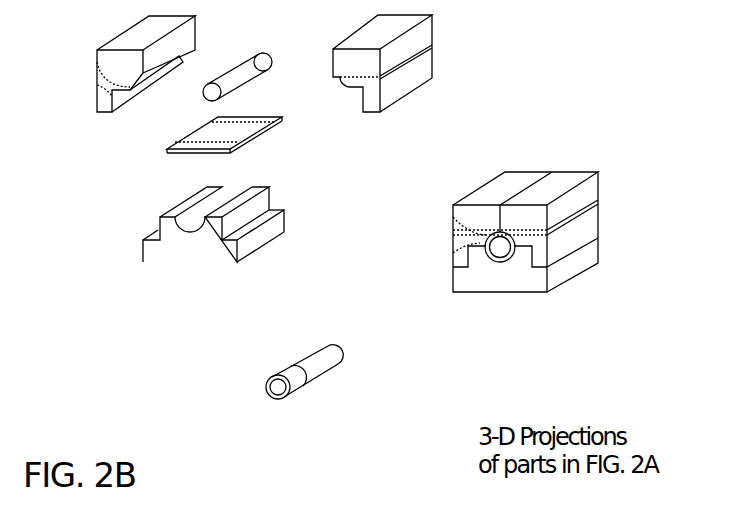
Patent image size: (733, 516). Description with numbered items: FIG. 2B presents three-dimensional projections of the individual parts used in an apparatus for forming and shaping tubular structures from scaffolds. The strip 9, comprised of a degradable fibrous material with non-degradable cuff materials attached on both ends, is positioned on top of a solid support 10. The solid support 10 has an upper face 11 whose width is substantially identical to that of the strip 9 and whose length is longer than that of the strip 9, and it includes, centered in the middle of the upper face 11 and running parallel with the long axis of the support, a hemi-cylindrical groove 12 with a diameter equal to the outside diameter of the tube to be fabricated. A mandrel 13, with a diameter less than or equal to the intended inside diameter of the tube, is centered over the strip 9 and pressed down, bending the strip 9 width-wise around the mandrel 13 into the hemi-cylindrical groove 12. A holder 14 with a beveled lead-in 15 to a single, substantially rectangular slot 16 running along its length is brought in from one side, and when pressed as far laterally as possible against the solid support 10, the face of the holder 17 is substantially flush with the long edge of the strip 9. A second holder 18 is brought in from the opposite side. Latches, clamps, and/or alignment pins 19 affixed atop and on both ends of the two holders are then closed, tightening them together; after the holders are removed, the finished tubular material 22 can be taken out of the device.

The strip 9 is at (260, 140).
The solid support 10 is at (181, 242).
The upper face 11 is at (163, 208).
The hemi-cylindrical groove 12 is at (203, 208).
The mandrel 13 is at (248, 57).
The holder 14 is at (119, 68).
The beveled lead-in 15 is at (93, 78).
The slot 16 is at (158, 68).
The face of the holder 17 is at (567, 210).
The second holder 18 is at (377, 35).
The latches, clamps, and/or alignment pins 19 is at (585, 157).
The tubular material 22 is at (343, 340).